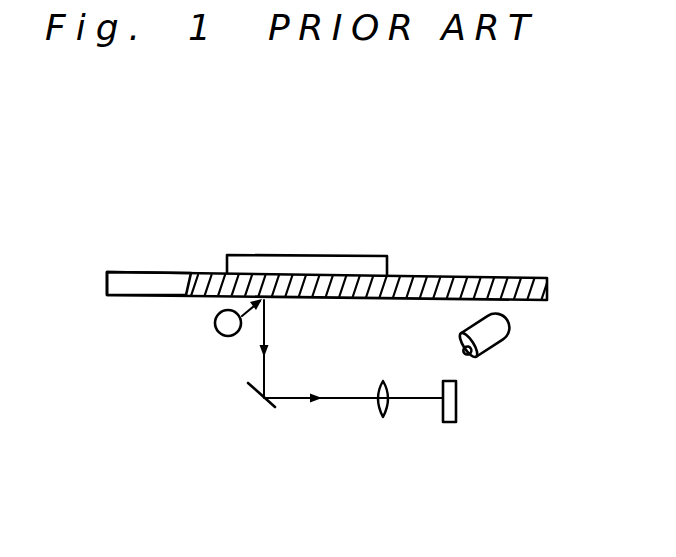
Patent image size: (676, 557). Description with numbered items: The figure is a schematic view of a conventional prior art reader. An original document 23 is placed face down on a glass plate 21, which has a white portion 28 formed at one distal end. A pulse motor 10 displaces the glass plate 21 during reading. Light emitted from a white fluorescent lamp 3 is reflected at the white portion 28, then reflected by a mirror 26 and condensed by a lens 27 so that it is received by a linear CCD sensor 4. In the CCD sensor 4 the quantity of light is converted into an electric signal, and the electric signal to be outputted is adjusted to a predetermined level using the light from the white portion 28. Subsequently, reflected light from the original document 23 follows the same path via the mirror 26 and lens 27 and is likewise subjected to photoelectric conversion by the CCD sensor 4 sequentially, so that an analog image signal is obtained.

The glass plate 21 is at (550, 278).
The white portion 28 is at (137, 272).
The original document 23 is at (328, 256).
The white fluorescent lamp 3 is at (218, 331).
The mirror 26 is at (267, 410).
The lens 27 is at (388, 410).
The linear CCD sensor 4 is at (456, 410).
The pulse motor 10 is at (512, 335).